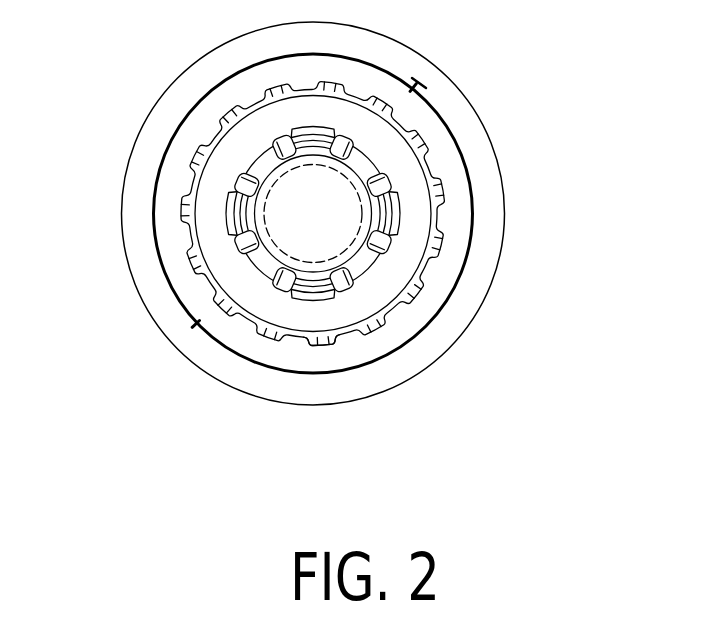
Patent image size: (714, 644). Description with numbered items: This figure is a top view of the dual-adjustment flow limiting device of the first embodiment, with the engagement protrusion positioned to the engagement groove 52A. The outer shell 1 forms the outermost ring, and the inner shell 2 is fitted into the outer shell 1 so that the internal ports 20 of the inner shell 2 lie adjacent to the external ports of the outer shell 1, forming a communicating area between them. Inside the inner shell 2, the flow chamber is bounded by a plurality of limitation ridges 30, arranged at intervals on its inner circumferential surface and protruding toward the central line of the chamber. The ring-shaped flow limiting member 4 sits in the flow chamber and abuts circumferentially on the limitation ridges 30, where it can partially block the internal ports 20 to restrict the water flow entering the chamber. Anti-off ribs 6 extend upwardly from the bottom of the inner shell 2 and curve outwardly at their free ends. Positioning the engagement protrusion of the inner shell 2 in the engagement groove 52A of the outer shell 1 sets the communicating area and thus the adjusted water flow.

The outer shell 1 is at (146, 277).
The inner shell 2 is at (178, 170).
The engagement groove 52A is at (420, 82).
The limitation ridges 30 is at (435, 166).
The internal ports 20 is at (307, 340).
The flow limiting member 4 is at (418, 218).
The anti-off ribs 6 is at (342, 292).